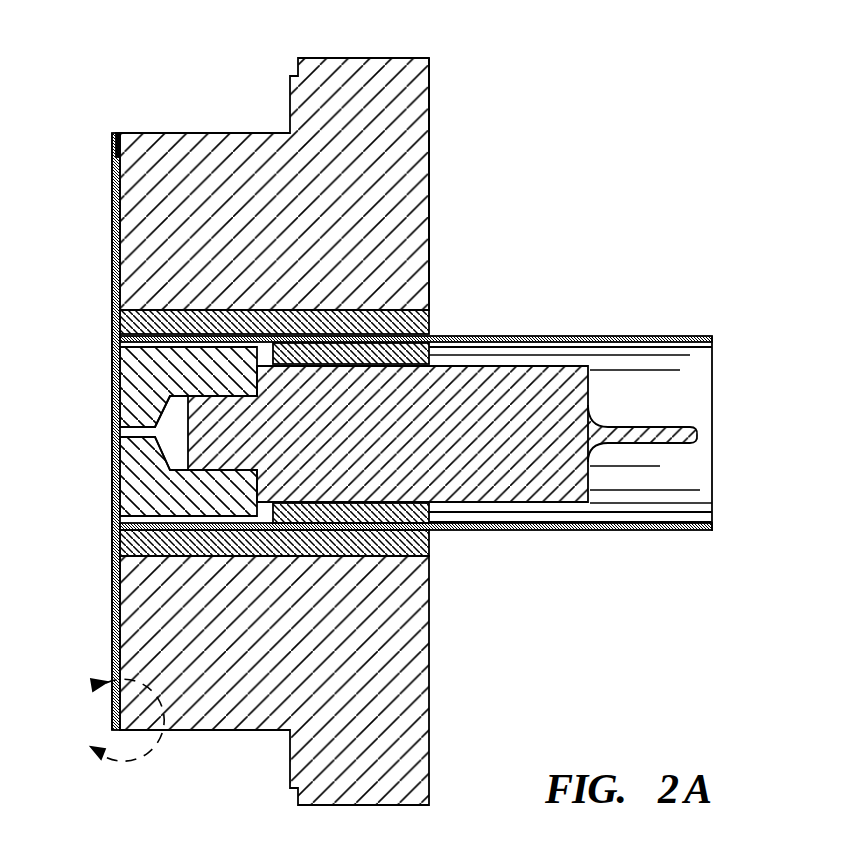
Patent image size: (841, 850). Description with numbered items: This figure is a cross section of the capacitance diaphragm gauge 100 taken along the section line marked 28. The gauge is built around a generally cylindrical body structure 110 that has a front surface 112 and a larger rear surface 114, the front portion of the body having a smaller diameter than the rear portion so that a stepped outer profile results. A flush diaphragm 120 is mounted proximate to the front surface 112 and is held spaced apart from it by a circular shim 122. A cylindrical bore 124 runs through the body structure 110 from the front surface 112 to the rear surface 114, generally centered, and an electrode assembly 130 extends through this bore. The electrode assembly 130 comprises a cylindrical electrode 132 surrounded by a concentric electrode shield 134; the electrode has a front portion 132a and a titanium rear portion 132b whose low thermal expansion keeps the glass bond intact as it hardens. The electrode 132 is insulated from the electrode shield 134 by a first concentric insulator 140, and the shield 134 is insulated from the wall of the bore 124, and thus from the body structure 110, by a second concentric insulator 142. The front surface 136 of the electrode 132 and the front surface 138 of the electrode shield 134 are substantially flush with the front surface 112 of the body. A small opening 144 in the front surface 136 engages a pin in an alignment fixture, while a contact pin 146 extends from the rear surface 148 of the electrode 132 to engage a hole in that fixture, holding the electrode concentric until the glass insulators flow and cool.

The capacitance diaphragm gauge 100 is at (512, 72).
The body structure 110 is at (383, 58).
The front surface 112 is at (115, 222).
The rear surface 114 is at (430, 165).
The flush diaphragm 120 is at (113, 165).
The circular shim 122 is at (117, 133).
The cylindrical bore 124 is at (430, 546).
The electrode assembly 130 is at (508, 337).
The cylindrical electrode 132 is at (553, 366).
The front portion 132a is at (530, 490).
The rear portion 132b is at (118, 492).
The electrode shield 134 is at (663, 533).
The front surface of electrode 136 is at (117, 352).
The front surface of electrode shield 138 is at (118, 528).
The first concentric insulator 140 is at (432, 352).
The second concentric insulator 142 is at (427, 323).
The small opening 144 is at (118, 433).
The contact pin 146 is at (664, 427).
The rear surface of electrode 148 is at (590, 384).
The section line 28 is at (114, 723).